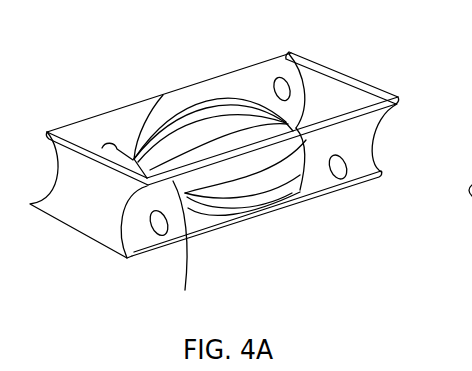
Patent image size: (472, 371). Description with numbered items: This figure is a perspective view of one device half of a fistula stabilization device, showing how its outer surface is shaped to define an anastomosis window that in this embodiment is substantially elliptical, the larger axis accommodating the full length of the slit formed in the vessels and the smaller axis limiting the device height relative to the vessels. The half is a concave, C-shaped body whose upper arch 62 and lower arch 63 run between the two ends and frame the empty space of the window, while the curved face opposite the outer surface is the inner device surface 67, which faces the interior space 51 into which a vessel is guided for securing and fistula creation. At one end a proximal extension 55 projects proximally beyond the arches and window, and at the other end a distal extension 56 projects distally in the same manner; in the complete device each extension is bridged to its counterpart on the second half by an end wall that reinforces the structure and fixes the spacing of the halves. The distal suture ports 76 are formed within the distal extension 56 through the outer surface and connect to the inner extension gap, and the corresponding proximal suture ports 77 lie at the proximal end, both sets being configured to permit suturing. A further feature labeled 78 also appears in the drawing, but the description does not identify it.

The interior space 51 is at (220, 141).
The proximal extension 55 is at (378, 138).
The distal extension 56 is at (127, 218).
The upper arch 62 is at (398, 100).
The lower arch 63 is at (382, 175).
The inner device surface 67 is at (330, 142).
The distal suture ports 76 is at (160, 228).
The proximal suture ports 77 is at (341, 172).
The side wall 78 is at (306, 183).